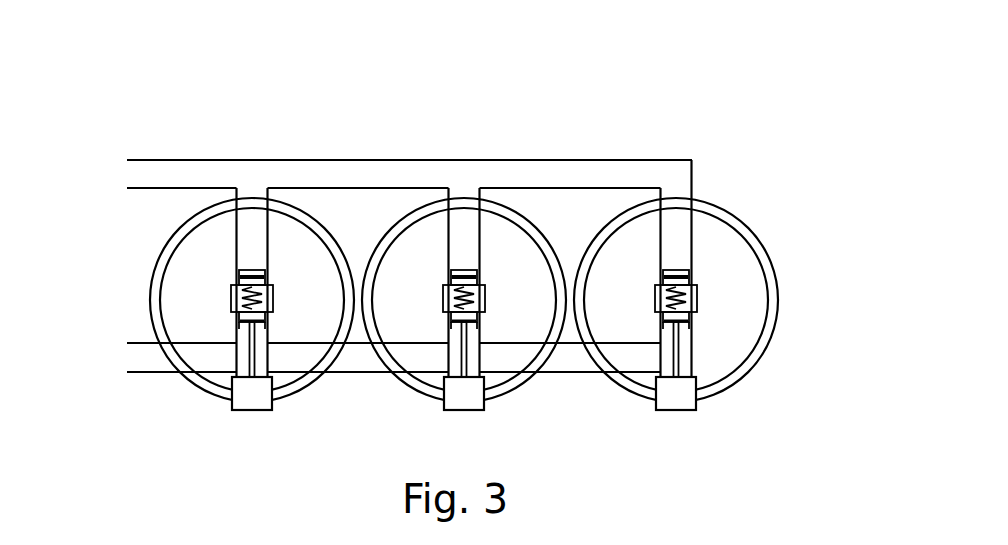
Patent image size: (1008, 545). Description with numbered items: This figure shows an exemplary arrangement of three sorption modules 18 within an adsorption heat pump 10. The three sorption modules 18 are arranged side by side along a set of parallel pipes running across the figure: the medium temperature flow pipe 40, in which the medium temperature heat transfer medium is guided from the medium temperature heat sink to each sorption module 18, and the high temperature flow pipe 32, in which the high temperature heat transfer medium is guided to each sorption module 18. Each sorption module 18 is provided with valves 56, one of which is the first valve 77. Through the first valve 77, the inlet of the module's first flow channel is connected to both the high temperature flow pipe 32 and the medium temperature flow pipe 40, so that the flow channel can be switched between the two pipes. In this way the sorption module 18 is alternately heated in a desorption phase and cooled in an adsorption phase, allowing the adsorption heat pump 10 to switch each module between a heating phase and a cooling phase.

The adsorption heat pump 10 is at (453, 238).
The sorption module 18 is at (464, 252).
The high temperature flow pipe 32 is at (388, 387).
The medium temperature flow pipe 40 is at (409, 137).
The valves 56 is at (453, 359).
The first valve 77 is at (453, 359).